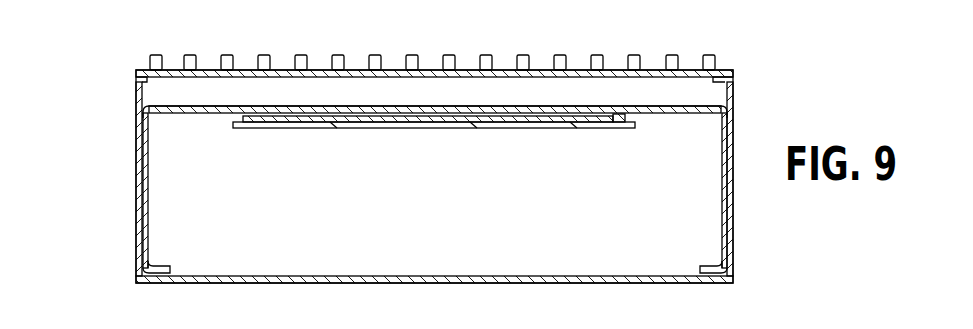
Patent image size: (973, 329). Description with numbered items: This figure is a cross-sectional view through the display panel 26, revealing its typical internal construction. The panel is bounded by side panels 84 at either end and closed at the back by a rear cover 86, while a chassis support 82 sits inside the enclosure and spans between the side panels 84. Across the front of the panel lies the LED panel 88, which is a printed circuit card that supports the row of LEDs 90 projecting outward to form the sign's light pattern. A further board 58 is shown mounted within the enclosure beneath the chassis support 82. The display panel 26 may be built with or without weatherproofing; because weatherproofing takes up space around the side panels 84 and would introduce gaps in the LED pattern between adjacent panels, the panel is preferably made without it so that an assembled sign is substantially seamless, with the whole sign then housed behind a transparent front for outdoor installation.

The display panel 26 is at (753, 101).
The circuit board / plate 58 is at (433, 128).
The chassis support 82 is at (185, 113).
The side panels 84 is at (735, 207).
The rear cover 86 is at (238, 283).
The LED panel 88 is at (174, 68).
The LEDs 90 is at (636, 55).